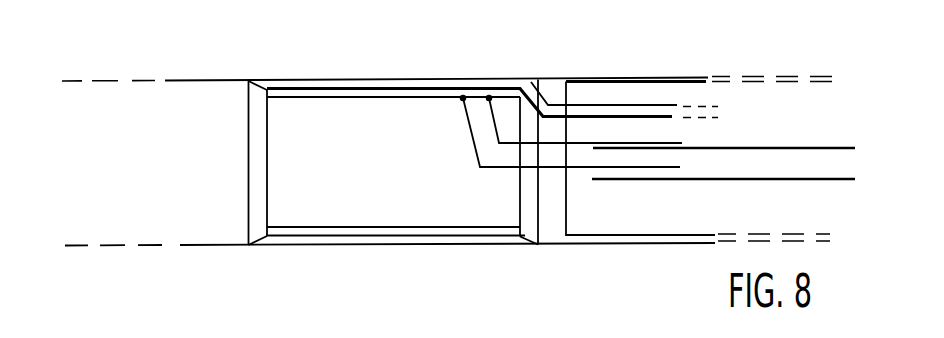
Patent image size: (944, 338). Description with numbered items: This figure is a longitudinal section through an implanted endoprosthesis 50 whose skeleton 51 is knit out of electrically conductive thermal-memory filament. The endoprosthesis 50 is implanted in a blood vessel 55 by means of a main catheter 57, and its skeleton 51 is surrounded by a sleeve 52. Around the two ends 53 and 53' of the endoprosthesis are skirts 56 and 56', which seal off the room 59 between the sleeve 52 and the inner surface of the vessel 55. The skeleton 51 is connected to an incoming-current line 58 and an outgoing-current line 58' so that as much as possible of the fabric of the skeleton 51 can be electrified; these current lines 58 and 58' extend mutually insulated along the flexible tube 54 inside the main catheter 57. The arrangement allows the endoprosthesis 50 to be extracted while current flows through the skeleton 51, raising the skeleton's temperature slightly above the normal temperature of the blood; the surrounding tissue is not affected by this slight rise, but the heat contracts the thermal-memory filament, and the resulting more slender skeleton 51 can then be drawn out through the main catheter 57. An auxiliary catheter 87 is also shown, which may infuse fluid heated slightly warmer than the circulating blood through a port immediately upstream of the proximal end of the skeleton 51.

The endoprosthesis 50 is at (405, 86).
The skeleton 51 is at (320, 102).
The sleeve 52 is at (358, 87).
The end of the endoprosthesis 53 is at (574, 162).
The end of the endoprosthesis 53' is at (214, 163).
The flexible tube 54 is at (607, 106).
The blood vessel 55 is at (303, 80).
The skirt 56 is at (533, 202).
The skirt 56' is at (247, 122).
The main catheter 57 is at (663, 234).
The incoming-current line 58 is at (670, 121).
The outgoing-current line 58' is at (657, 162).
The room 59 is at (310, 242).
The auxiliary catheter 87 is at (678, 78).